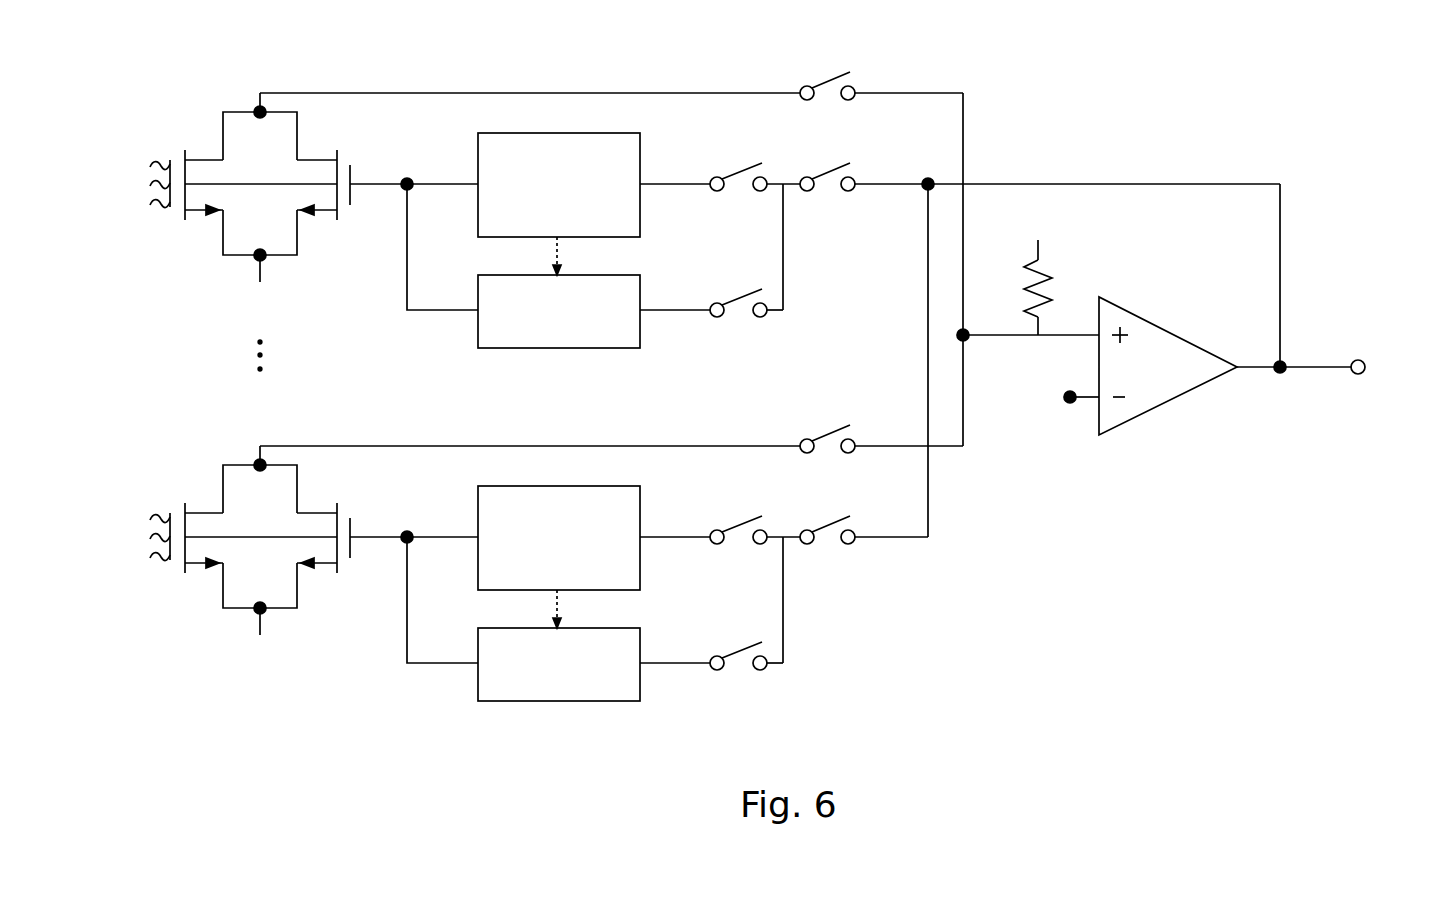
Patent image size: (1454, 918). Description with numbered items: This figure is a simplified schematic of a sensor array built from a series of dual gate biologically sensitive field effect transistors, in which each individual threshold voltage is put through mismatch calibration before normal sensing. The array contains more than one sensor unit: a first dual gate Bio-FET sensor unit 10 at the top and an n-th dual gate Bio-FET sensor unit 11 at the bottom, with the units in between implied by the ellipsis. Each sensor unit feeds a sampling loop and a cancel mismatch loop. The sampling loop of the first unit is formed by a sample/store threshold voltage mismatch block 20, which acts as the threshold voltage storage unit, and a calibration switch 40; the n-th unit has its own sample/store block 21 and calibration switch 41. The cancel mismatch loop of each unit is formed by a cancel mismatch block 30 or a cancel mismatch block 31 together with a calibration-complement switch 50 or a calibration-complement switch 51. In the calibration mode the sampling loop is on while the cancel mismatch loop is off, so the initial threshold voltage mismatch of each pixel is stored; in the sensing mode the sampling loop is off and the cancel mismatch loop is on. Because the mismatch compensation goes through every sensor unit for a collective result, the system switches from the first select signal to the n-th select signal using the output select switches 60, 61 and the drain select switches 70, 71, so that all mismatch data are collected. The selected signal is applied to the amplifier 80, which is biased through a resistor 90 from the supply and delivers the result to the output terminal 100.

The floating-gate sensing transistor cell 1 10 is at (247, 196).
The floating-gate sensing transistor cell n 11 is at (247, 539).
The sample/store VTH mismatch block 1 20 is at (559, 185).
The sample/store VTH mismatch block n 21 is at (559, 538).
The cancel mismatch block 1 30 is at (559, 311).
The cancel mismatch block n 31 is at (559, 664).
The Cal switch 1 40 is at (738, 163).
The Cal switch n 41 is at (738, 516).
The Cal-bar switch 1 50 is at (718, 258).
The Cal-bar switch n 51 is at (738, 640).
The Sel 1 output switch 60 is at (837, 162).
The Sel n output switch 61 is at (837, 515).
The Sel 1 drain switch 70 is at (837, 71).
The Sel n drain switch 71 is at (837, 424).
The comparator / operational amplifier 80 is at (1127, 366).
The pull-up resistor to VDD 90 is at (1041, 270).
The VOUT output terminal 100 is at (1332, 370).